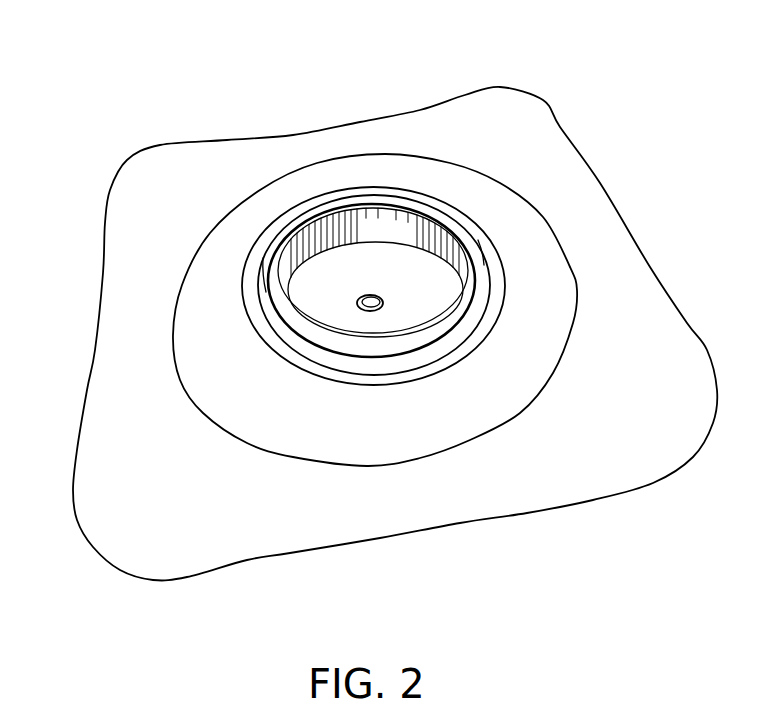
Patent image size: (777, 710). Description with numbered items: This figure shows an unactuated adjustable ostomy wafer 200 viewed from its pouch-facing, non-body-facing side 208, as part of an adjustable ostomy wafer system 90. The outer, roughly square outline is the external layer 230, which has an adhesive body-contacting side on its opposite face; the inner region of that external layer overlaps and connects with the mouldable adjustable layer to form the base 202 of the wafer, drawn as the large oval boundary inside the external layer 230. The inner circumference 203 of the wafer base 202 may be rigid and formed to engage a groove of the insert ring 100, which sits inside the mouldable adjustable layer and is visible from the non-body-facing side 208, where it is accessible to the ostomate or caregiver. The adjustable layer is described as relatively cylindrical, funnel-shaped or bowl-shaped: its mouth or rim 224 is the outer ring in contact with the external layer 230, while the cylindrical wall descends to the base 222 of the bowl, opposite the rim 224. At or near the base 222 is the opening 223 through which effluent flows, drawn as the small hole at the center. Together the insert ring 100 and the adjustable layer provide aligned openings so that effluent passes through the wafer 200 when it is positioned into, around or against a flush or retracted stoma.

The adjustable wafer 200 is at (153, 78).
The adjustable ostomy wafer system 90 is at (62, 220).
The external layer 230 is at (515, 115).
The non-body-facing side 208 is at (328, 116).
The base 202 is at (131, 327).
The mouth/rim 224 is at (296, 363).
The inner circumference 203 is at (467, 322).
The insert ring 100 is at (475, 277).
The base of the bowl 222 is at (405, 272).
The opening 223 is at (372, 299).